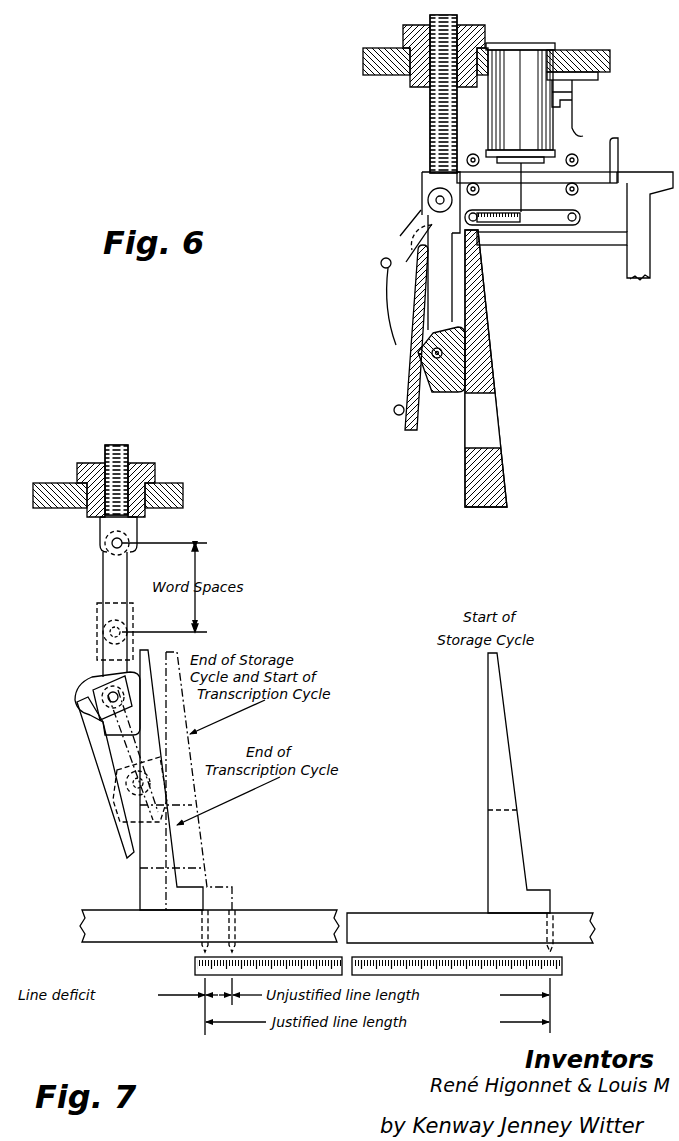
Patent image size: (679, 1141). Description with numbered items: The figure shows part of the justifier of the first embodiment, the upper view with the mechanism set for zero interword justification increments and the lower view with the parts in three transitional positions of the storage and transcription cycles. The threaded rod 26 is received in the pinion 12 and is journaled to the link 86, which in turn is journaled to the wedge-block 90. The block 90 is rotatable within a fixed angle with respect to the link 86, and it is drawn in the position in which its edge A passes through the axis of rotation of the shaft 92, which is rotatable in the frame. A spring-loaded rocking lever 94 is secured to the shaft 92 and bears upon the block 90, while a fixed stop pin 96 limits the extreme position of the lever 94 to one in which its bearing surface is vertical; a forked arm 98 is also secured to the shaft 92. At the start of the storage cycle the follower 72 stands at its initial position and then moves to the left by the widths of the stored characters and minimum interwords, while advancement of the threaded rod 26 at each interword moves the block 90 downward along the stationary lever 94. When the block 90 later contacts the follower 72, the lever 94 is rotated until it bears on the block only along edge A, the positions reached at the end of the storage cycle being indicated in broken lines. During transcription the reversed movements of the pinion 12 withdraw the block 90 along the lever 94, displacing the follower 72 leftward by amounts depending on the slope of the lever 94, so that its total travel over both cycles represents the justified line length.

In FIG. 6, the pinion 12 is at (403, 32).
In FIG. 7, the pinion 12 is at (156, 470).
In FIG. 6, the threaded rod 26 is at (457, 16).
In FIG. 7, the threaded rod 26 is at (117, 447).
In FIG. 7, the follower 72 is at (512, 775).
In FIG. 6, the link 86 is at (432, 226).
In FIG. 6, the wedge-block 90 is at (445, 392).
In FIG. 7, the wedge-block 90 is at (108, 718).
In FIG. 7, the shaft 92 is at (92, 682).
In FIG. 6, the spring-loaded rocking lever 94 is at (409, 377).
In FIG. 7, the spring-loaded rocking lever 94 is at (118, 815).
In FIG. 6, the fixed stop pin 96 is at (397, 414).
In FIG. 6, the forked arm 98 is at (418, 238).